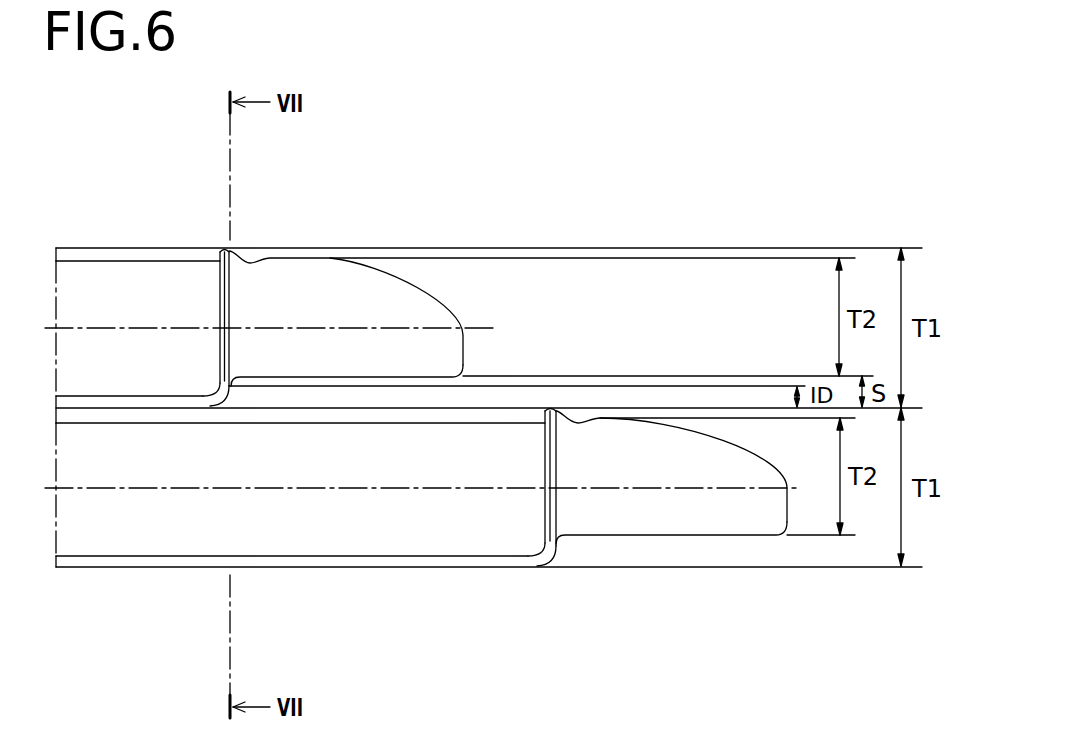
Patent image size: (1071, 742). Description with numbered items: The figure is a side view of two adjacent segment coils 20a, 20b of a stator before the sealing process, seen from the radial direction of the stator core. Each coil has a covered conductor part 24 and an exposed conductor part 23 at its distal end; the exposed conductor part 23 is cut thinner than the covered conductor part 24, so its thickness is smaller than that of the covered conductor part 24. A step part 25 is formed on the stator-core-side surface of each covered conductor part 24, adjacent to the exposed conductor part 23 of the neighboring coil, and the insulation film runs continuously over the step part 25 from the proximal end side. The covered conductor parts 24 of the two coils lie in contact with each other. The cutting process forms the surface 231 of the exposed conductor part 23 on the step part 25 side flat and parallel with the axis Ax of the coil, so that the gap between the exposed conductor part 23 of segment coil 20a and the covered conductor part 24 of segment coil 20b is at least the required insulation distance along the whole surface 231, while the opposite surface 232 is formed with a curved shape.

The segment coil 20a is at (99, 243).
The segment coil 20b is at (99, 575).
The covered conductor part 24 is at (161, 278).
The step part 25 is at (216, 389).
The exposed conductor part 23 is at (372, 302).
The surface at the stator core side of the exposed conductor part 231 is at (395, 379).
The surface of the exposed conductor part 232 is at (431, 295).
The axis of the segment coil Ax is at (277, 327).